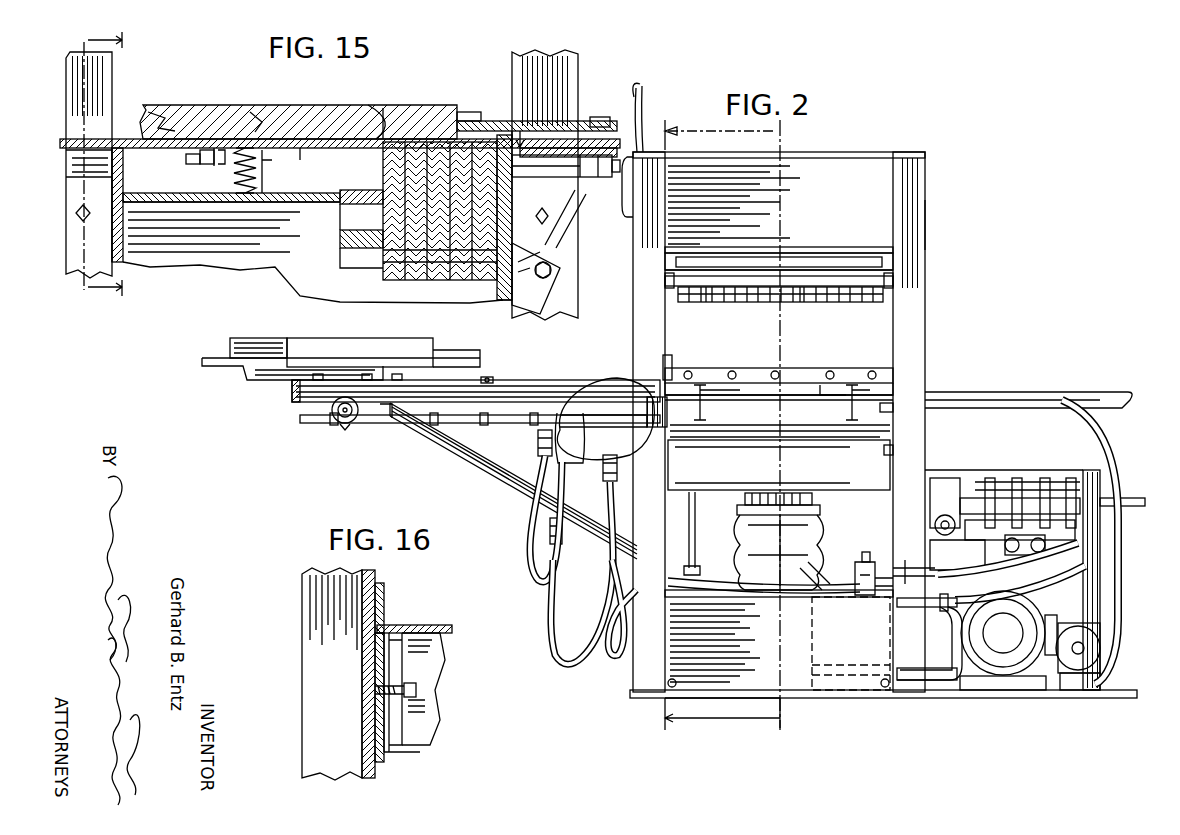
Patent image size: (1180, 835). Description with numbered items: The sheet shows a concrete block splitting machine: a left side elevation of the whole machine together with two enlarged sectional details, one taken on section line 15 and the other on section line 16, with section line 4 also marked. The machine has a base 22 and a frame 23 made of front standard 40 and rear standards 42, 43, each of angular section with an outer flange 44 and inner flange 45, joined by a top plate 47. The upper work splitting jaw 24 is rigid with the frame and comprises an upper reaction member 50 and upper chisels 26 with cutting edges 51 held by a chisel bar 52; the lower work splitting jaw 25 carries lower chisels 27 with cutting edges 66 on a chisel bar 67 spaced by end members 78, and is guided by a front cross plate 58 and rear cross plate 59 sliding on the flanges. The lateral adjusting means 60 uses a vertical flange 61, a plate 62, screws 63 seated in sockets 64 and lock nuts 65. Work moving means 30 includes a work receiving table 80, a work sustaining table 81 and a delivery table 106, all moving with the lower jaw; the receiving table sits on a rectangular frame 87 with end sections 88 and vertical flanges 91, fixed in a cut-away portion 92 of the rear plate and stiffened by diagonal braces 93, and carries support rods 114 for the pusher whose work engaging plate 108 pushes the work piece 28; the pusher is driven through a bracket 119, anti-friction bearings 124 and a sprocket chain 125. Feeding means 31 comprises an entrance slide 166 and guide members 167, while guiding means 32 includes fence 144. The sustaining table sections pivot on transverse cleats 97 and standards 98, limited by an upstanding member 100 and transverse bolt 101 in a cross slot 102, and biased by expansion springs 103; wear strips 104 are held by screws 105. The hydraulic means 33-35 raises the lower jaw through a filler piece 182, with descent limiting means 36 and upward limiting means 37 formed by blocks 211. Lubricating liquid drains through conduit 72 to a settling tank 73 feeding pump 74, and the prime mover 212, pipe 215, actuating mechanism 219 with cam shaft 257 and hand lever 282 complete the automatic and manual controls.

In FIG. 2, the section line 4- 4 is at (722, 425).
In FIG. 2, the section line 15- 15 is at (558, 420).
In FIG. 15, the section line 16- 16 is at (118, 166).
In FIG. 2, the base 22 is at (1115, 690).
In FIG. 2, the frame 23 is at (927, 226).
In FIG. 2, the upper work splitting jaw 24 is at (833, 266).
In FIG. 2, the lower work splitting jaw 25 is at (893, 408).
In FIG. 2, the upper chisels 26 is at (713, 301).
In FIG. 15, the lower chisels 27 is at (385, 165).
In FIG. 15, the work piece 28 is at (387, 108).
In FIG. 15, the work moving and supporting means 30 is at (606, 130).
In FIG. 2, the work moving and supporting means 30 is at (380, 382).
In FIG. 2, the feeding and guiding means 31 is at (305, 339).
In FIG. 2, the work guiding and retaining means 32 is at (808, 370).
In FIG. 2, the chisel engaging, setting and splitting means 33-35 is at (818, 522).
In FIG. 2, the descent limiting means 36 is at (866, 562).
In FIG. 2, the upward travel limiting means 37 is at (895, 282).
In FIG. 2, the front standard 40 is at (926, 343).
In FIG. 16, the front standard 40 is at (305, 645).
In FIG. 2, the rear standard 42 is at (640, 320).
In FIG. 15, the rear standard 43 is at (574, 62).
In FIG. 2, the outer flange 44 is at (668, 663).
In FIG. 16, the outer flange 44 is at (318, 766).
In FIG. 16, the inner flange 45 is at (376, 778).
In FIG. 2, the top plate 47 is at (880, 156).
In FIG. 2, the upper reaction member 50 is at (820, 170).
In FIG. 2, the cutting edge 51 is at (806, 301).
In FIG. 2, the chisel bar 52 is at (787, 280).
In FIG. 15, the front cross plate 58 is at (86, 256).
In FIG. 2, the front cross plate 58 is at (893, 450).
In FIG. 15, the rear cross plate 59 is at (503, 303).
In FIG. 2, the rear cross plate 59 is at (673, 365).
In FIG. 16, the lateral adjusting means 60 is at (437, 741).
In FIG. 15, the vertical flange 61 is at (82, 230).
In FIG. 16, the vertical flange 61 is at (385, 630).
In FIG. 16, the plate 62 is at (390, 758).
In FIG. 16, the screw 63 is at (418, 690).
In FIG. 16, the socket 64 is at (375, 690).
In FIG. 16, the lock nut 65 is at (420, 714).
In FIG. 15, the cutting edge 66 is at (372, 112).
In FIG. 15, the chisel bar 67 is at (345, 200).
In FIG. 2, the conduit 72 is at (695, 507).
In FIG. 2, the settling tank 73 is at (702, 696).
In FIG. 2, the pump 74 is at (1102, 642).
In FIG. 15, the end member 78 is at (495, 255).
In FIG. 15, the work receiving table 80 is at (639, 85).
In FIG. 2, the work receiving table 80 is at (467, 384).
In FIG. 15, the work sustaining table 81 is at (307, 150).
In FIG. 2, the work sustaining table 81 is at (763, 390).
In FIG. 2, the rectangular frame 87 is at (292, 402).
In FIG. 15, the end section 88 is at (507, 133).
In FIG. 2, the vertical flange 91 is at (383, 408).
In FIG. 15, the cut-away portion 92 is at (519, 146).
In FIG. 2, the diagonal brace 93 is at (492, 457).
In FIG. 2, the transverse cleat 97 is at (695, 403).
In FIG. 2, the standard 98 is at (846, 402).
In FIG. 15, the upstanding member 100 is at (217, 185).
In FIG. 15, the transverse bolt 101 is at (185, 160).
In FIG. 15, the cross slot 102 is at (196, 150).
In FIG. 15, the expansion spring 103 is at (256, 168).
In FIG. 2, the expansion spring 103 is at (833, 398).
In FIG. 15, the wear strip 104 is at (287, 136).
In FIG. 15, the screw 105 is at (260, 146).
In FIG. 15, the delivery table 106 is at (110, 146).
In FIG. 2, the delivery table 106 is at (1030, 393).
In FIG. 16, the delivery table 106 is at (440, 625).
In FIG. 15, the work engaging plate 108 is at (467, 120).
In FIG. 15, the support rod 114 is at (604, 180).
In FIG. 2, the bracket 119 is at (665, 445).
In FIG. 2, the anti-friction bearing 124 is at (337, 422).
In FIG. 2, the sprocket chain 125 is at (396, 425).
In FIG. 2, the fence 144 is at (753, 372).
In FIG. 2, the entrance slide 166 is at (202, 361).
In FIG. 2, the guide member 167 is at (336, 350).
In FIG. 2, the filler piece 182 is at (742, 508).
In FIG. 2, the block 211 is at (668, 283).
In FIG. 2, the prime mover 212 is at (998, 668).
In FIG. 2, the pipe 215 is at (940, 628).
In FIG. 2, the actuating mechanism 219 is at (1082, 470).
In FIG. 2, the cam shaft 257 is at (1038, 488).
In FIG. 2, the hand lever 282 is at (1133, 507).